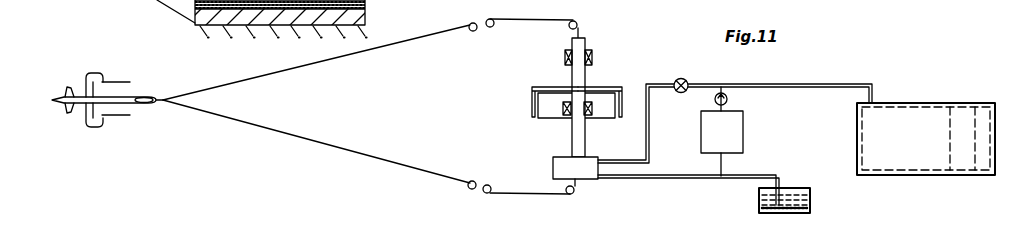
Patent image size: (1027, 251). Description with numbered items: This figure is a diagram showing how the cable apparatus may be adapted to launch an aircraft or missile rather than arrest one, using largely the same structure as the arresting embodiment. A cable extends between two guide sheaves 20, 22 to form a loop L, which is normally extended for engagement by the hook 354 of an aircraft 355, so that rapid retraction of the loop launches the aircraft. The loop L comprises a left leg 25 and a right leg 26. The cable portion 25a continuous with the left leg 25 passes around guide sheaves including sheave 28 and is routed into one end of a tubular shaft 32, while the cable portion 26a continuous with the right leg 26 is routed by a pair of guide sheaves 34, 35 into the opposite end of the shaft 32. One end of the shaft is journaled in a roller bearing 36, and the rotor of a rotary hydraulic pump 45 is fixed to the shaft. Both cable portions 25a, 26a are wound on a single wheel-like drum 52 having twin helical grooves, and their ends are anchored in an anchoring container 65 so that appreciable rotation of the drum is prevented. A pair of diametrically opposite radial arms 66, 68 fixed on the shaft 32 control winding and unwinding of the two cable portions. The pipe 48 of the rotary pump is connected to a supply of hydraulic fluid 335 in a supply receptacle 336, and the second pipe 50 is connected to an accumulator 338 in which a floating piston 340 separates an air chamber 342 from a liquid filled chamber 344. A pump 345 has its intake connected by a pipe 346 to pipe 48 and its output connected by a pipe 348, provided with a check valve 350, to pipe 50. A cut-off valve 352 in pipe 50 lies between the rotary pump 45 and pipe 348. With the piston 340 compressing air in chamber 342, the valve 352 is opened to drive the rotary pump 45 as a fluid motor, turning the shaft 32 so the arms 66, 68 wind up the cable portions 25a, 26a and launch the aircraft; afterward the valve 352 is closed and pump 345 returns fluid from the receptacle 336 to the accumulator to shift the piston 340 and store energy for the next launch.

The cable loop L is at (284, 133).
The guide sheave 20 is at (475, 181).
The guide sheave 22 is at (473, 31).
The left leg 25 is at (427, 160).
The cable portion 25a is at (510, 193).
The right leg 26 is at (446, 35).
The cable portion 26a is at (532, 19).
The guide sheave 28 is at (503, 177).
The tubular shaft 32 is at (580, 143).
The guide sheave 34 is at (492, 27).
The guide sheave 35 is at (578, 24).
The roller bearing 36 is at (593, 58).
The rotary hydraulic pump 45 is at (545, 173).
The pipe 48 is at (680, 179).
The second pipe 50 is at (657, 118).
The drum 52 is at (545, 118).
The anchoring container 65 is at (400, 22).
The radial arm 66 is at (550, 87).
The radial arm 68 is at (627, 74).
The hydraulic fluid 335 is at (789, 191).
The supply receptacle 336 is at (812, 199).
The accumulator 338 is at (910, 176).
The floating piston 340 is at (950, 123).
The air chamber 342 is at (983, 135).
The liquid filled chamber 344 is at (877, 138).
The pump 345 is at (740, 143).
The pipe 346 is at (725, 169).
The pipe 348 is at (728, 101).
The check valve 350 is at (715, 100).
The cut-off valve 352 is at (686, 78).
The hook 354 is at (157, 97).
The aircraft 355 is at (100, 73).